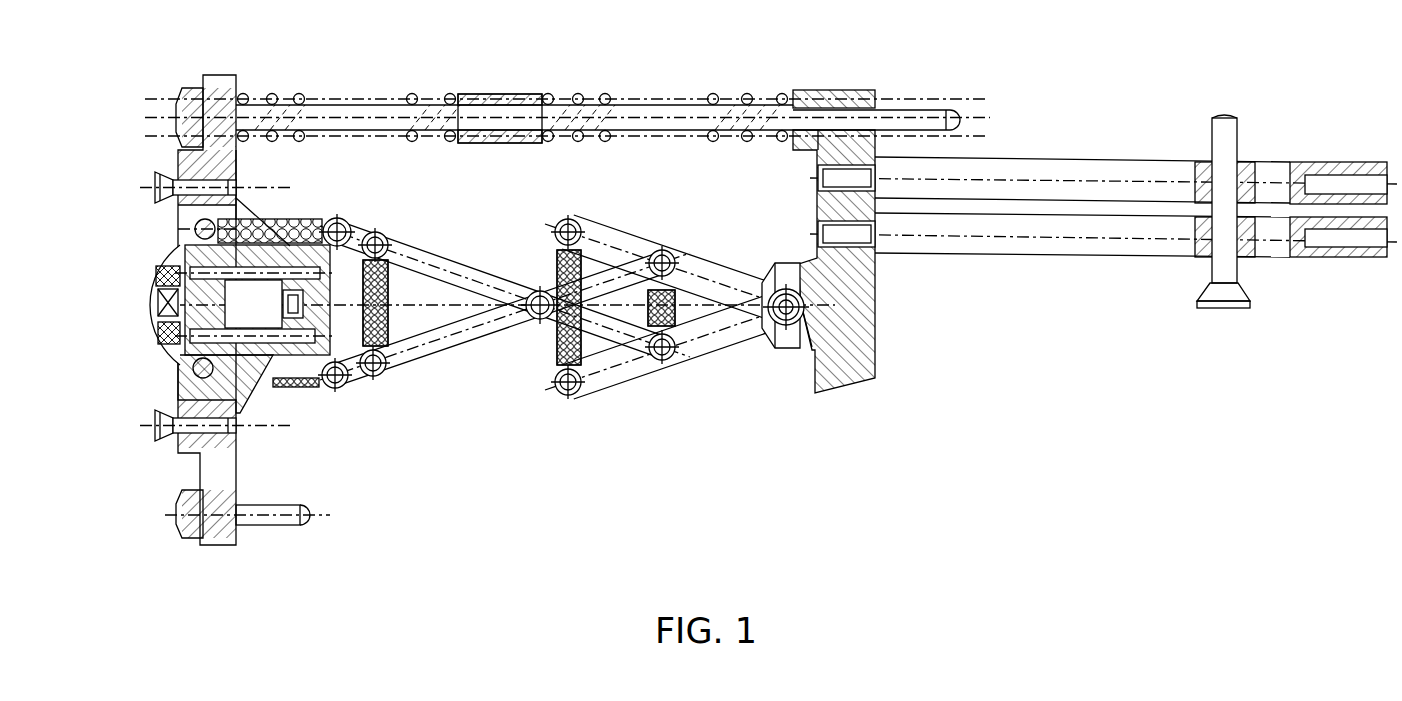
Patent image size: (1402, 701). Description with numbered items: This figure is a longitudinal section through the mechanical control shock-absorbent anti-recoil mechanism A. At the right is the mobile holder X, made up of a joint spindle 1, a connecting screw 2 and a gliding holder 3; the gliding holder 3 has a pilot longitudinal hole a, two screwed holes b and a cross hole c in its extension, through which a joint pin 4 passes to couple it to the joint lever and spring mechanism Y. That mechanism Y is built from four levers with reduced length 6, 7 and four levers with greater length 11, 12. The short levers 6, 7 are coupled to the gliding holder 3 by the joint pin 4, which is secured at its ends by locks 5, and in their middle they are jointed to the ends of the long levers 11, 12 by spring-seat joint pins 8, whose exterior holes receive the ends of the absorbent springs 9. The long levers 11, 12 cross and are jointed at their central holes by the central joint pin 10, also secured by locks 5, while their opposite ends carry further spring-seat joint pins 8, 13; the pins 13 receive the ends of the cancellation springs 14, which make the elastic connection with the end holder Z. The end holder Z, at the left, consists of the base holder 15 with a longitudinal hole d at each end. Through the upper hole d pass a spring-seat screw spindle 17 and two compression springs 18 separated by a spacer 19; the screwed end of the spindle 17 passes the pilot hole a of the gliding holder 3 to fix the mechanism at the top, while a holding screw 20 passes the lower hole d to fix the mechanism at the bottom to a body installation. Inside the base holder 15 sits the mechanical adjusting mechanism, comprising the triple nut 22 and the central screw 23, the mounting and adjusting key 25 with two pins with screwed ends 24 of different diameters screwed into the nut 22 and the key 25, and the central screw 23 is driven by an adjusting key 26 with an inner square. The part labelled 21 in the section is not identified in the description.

The joint spindle 1 is at (1085, 165).
The connecting screw 2 is at (1238, 136).
The gliding holder 3 is at (862, 292).
The joint pin 4 is at (787, 288).
The locks 5 is at (778, 330).
The lever with reduced length 6 is at (712, 345).
The lever with reduced length 7 is at (708, 272).
The spring-seat joint pin 8 is at (378, 232).
The absorbent spring 9 is at (388, 340).
The central joint pin 10 is at (539, 294).
The lever with greater length 11 is at (615, 262).
The lever with greater length 12 is at (425, 258).
The spring-seat joint pin 13 is at (340, 222).
The cancellation spring 14 is at (290, 219).
The base holder 15 is at (190, 152).
The spring-seat screw spindle 17 is at (192, 92).
The compression spring 18 is at (300, 94).
The spacer 19 is at (522, 94).
The holding screw 20 is at (285, 527).
The screw 21 is at (152, 186).
The triple nut 22 is at (195, 262).
The central screw 23 is at (158, 300).
The pin with screwed ends 24 is at (300, 336).
The mounting and adjusting key 25 is at (305, 302).
The adjusting key 26 is at (160, 332).
The pilot longitudinal hole a is at (810, 100).
The screwed holes b is at (828, 182).
The cross hole c is at (800, 335).
The longitudinal hole d is at (236, 90).
The mobile holder X is at (850, 152).
The joint lever and spring mechanism Y is at (497, 300).
The end holder Z is at (196, 229).
The mechanical control shock-absorbent anti-recoil mechanism A is at (490, 385).